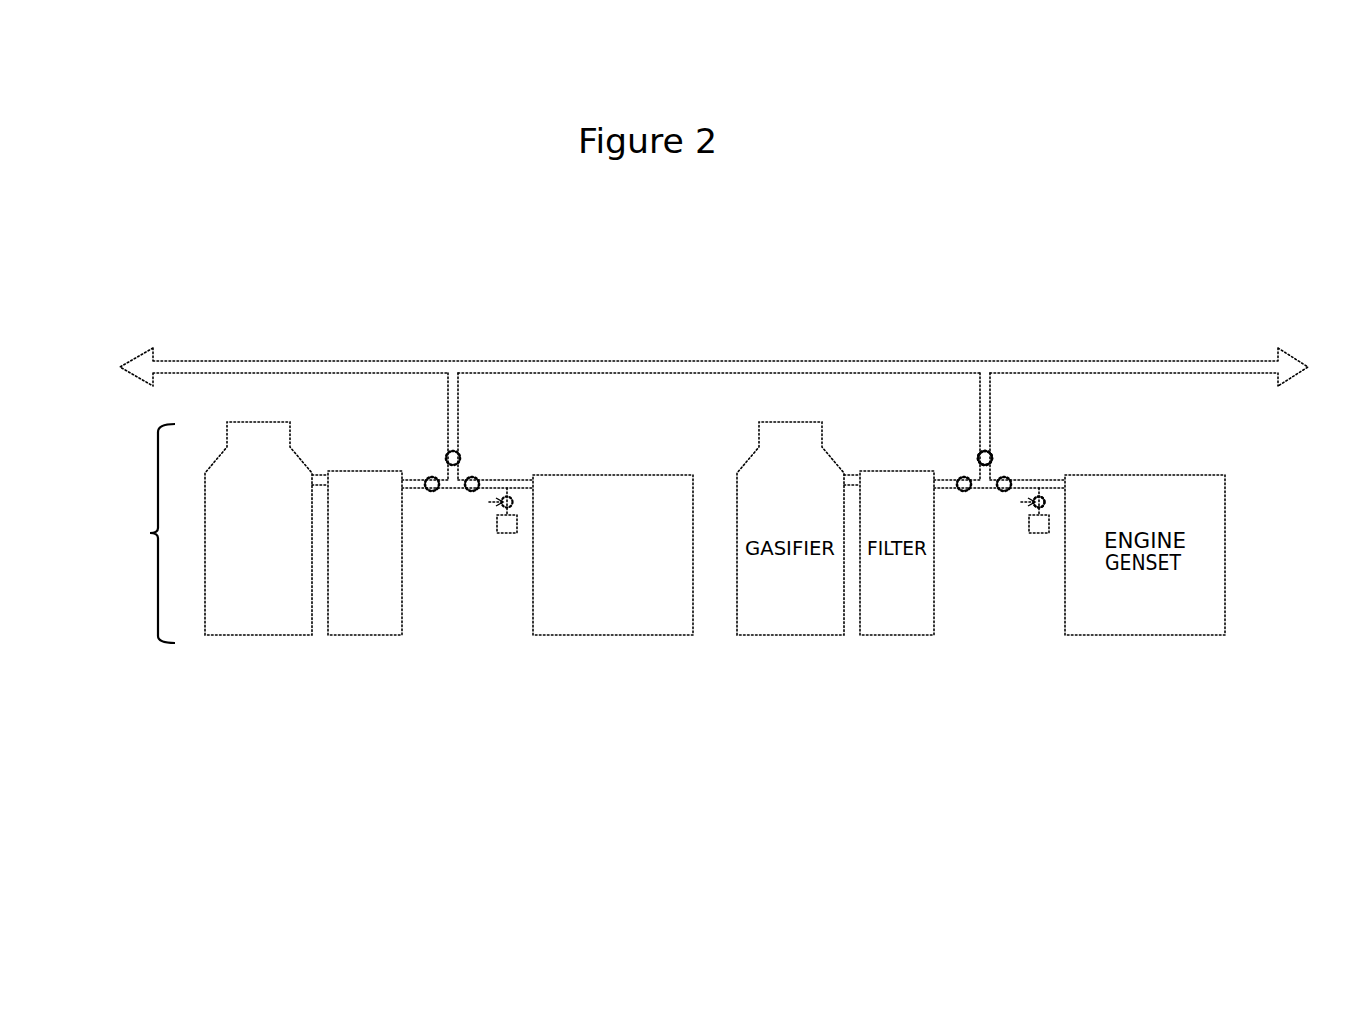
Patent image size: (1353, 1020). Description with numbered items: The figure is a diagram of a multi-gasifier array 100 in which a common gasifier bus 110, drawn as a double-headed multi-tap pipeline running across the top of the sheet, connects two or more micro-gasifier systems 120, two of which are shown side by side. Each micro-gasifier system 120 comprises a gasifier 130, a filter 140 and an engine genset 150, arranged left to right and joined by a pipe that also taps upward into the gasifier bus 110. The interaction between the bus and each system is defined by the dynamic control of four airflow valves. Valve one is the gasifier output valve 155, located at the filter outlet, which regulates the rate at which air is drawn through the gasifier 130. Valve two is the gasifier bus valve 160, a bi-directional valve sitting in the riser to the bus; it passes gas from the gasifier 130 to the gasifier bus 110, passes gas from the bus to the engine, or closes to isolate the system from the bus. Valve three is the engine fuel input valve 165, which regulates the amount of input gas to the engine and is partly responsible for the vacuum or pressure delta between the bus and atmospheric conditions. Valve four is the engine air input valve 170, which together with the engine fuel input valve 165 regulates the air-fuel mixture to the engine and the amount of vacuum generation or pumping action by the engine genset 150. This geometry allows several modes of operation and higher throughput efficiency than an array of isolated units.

The multi-gasifier array 100 is at (306, 223).
The common gasifier bus 110 is at (659, 356).
The micro-gasifier system 120 is at (150, 533).
The gasifier 130 is at (263, 648).
The filter 140 is at (363, 648).
The engine genset 150 is at (607, 648).
The gasifier output valve 155 is at (416, 468).
The gasifier bus valve 160 is at (438, 437).
The engine fuel input valve 165 is at (1006, 466).
The engine air input valve 170 is at (1042, 475).